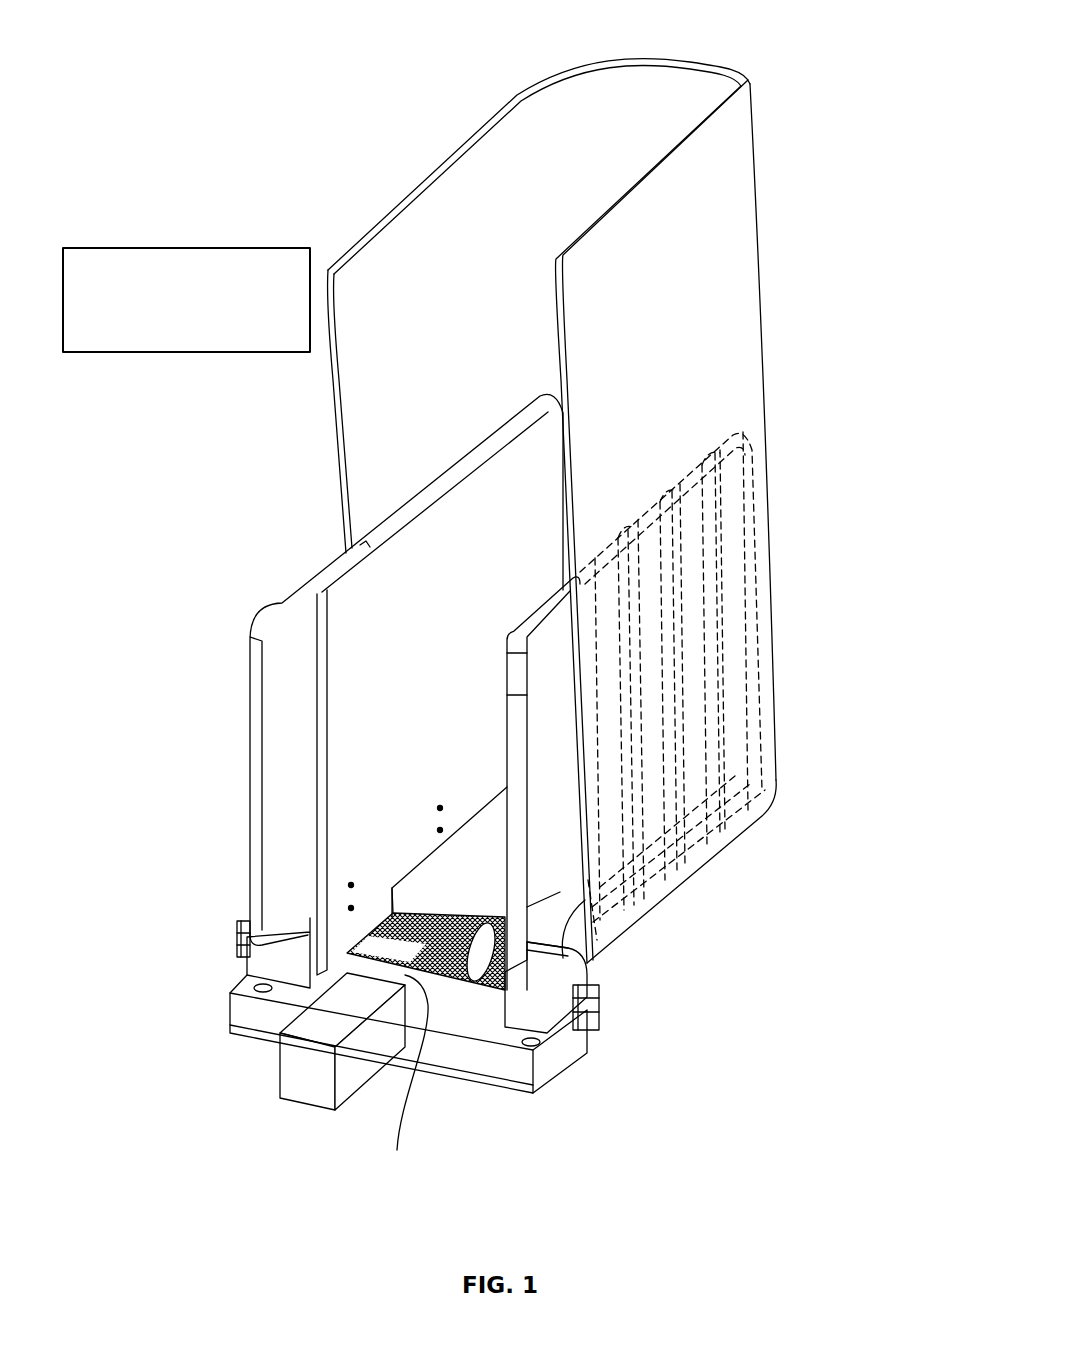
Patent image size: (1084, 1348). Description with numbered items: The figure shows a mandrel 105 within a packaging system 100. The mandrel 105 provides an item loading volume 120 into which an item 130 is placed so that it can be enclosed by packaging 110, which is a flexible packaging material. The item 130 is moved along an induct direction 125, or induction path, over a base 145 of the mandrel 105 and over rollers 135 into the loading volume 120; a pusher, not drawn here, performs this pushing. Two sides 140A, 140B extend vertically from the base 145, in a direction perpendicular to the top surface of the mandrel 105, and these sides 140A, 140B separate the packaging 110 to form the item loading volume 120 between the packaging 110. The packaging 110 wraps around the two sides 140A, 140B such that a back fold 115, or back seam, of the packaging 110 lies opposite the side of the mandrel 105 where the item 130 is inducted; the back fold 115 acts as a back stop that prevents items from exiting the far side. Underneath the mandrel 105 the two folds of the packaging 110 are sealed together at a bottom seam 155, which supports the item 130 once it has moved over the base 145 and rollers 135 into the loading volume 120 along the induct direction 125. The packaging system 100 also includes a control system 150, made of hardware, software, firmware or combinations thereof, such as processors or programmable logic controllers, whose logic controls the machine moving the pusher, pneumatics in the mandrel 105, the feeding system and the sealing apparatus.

The packaging system 100 is at (361, 56).
The mandrel 105 is at (305, 578).
The packaging 110 is at (501, 102).
The back fold 115 is at (768, 156).
The item loading volume 120 is at (492, 815).
The induct direction 125 is at (394, 1103).
The item 130 is at (310, 1105).
The rollers 135 is at (460, 985).
The side 140A is at (258, 708).
The side 140B is at (515, 723).
The base 145 is at (533, 1093).
The control system 150 is at (206, 323).
The bottom seam 155 is at (675, 893).